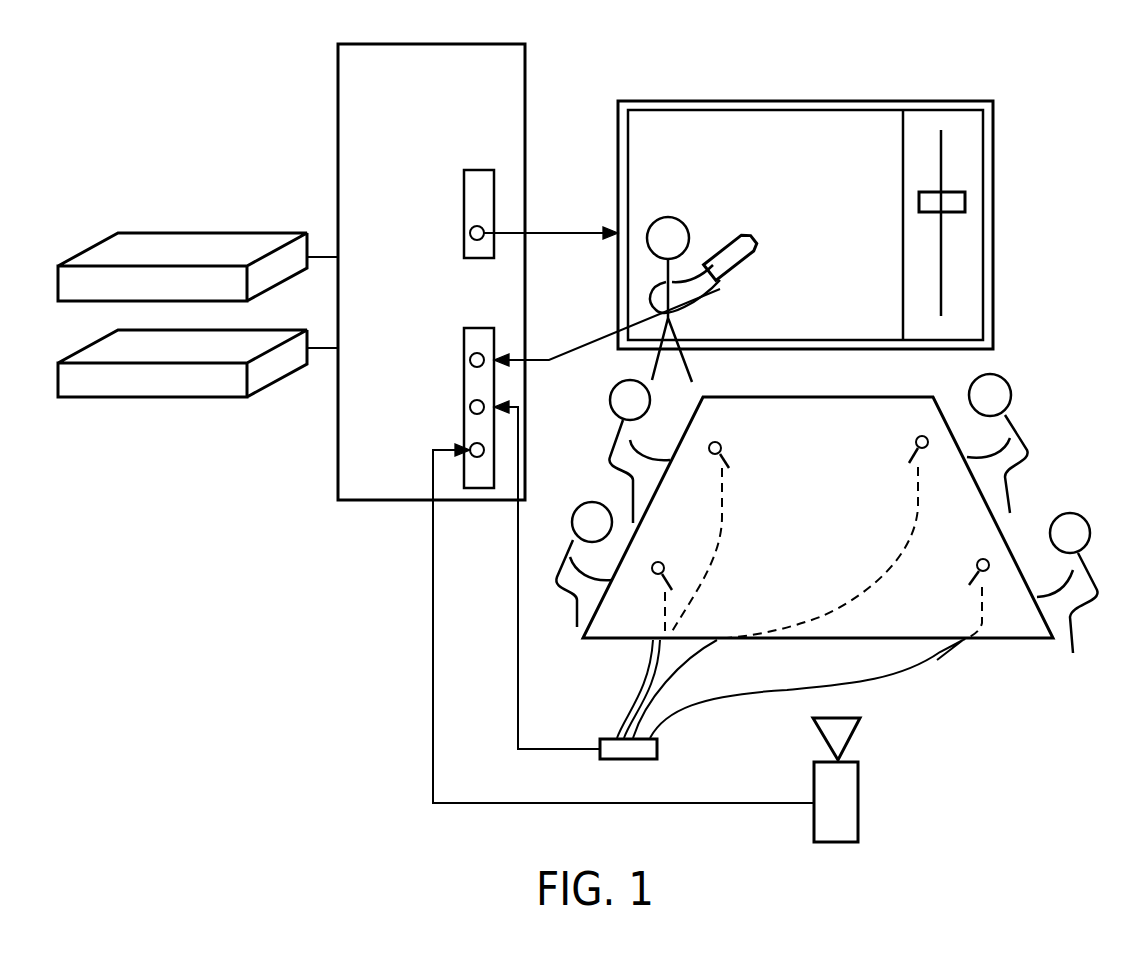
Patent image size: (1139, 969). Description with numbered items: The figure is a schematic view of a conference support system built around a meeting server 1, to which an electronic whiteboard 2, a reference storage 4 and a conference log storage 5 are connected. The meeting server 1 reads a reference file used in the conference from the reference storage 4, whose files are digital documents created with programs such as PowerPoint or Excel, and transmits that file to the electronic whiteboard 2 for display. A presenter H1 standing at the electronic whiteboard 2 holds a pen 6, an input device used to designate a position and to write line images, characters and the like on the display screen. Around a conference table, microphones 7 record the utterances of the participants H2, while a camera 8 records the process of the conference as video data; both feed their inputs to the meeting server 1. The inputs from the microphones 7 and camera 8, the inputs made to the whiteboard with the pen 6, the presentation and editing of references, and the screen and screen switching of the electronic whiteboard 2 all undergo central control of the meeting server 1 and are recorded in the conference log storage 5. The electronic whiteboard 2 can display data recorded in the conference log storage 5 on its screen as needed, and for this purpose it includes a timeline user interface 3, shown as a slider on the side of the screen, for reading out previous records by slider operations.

The meeting server 1 is at (473, 44).
The electronic whiteboard 2 is at (833, 101).
The timeline user interface 3 is at (973, 248).
The reference storage 4 is at (215, 233).
The conference log storage 5 is at (163, 398).
The pen 6 is at (752, 228).
The microphones 7 is at (722, 452).
The camera 8 is at (860, 782).
The presenter H1 is at (680, 216).
The participants H2 is at (1063, 500).